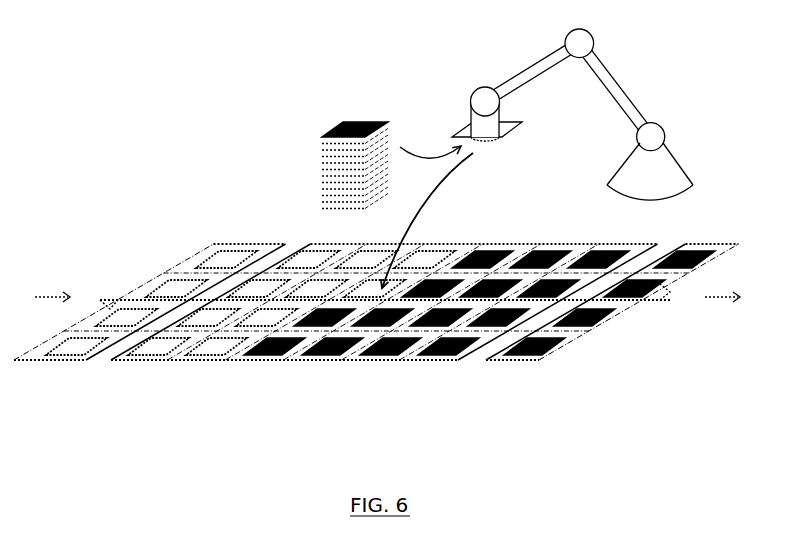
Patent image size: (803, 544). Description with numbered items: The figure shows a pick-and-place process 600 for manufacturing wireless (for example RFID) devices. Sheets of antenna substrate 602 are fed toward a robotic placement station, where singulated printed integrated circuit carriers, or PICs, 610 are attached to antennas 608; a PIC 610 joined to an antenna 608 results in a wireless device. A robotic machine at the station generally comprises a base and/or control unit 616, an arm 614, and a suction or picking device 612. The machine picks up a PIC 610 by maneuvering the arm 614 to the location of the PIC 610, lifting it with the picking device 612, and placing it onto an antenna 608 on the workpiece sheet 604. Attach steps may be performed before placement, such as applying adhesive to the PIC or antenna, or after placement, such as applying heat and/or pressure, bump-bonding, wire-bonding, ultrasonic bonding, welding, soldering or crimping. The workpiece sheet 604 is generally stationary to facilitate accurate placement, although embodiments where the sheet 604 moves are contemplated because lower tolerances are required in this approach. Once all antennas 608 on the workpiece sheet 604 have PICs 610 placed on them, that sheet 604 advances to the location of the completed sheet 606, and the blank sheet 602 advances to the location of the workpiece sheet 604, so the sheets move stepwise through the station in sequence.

The pick-and-place process 600 is at (152, 113).
The sheet of antenna substrate 602 is at (50, 362).
The workpiece sheet 604 is at (407, 363).
The completed sheet 606 is at (508, 363).
The antenna 608 is at (227, 343).
The printed integrated circuit carrier (PIC) 610 is at (332, 128).
The suction or picking device 612 is at (505, 136).
The arm 614 is at (548, 52).
The base and/or control unit 616 is at (676, 173).